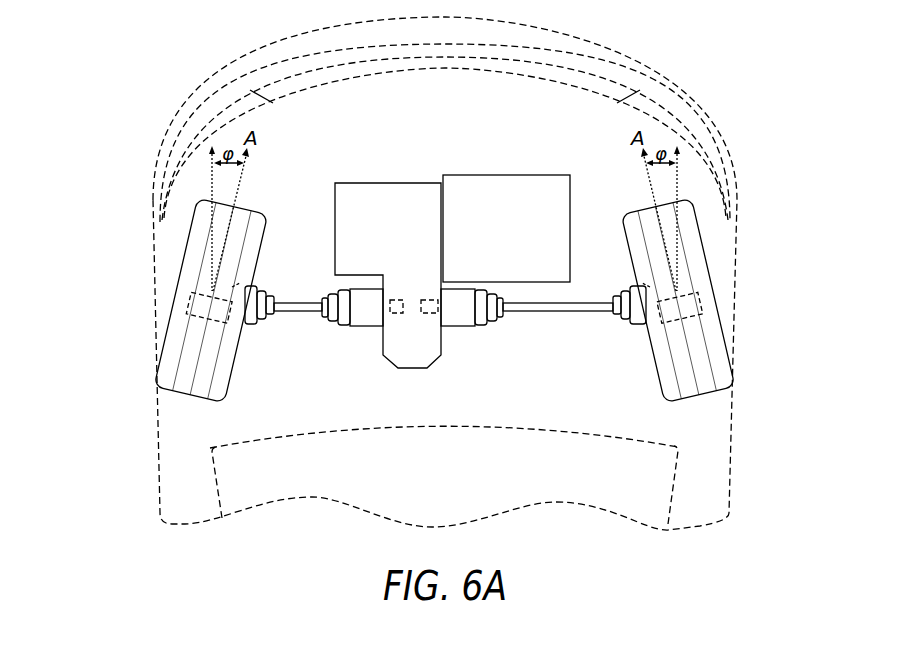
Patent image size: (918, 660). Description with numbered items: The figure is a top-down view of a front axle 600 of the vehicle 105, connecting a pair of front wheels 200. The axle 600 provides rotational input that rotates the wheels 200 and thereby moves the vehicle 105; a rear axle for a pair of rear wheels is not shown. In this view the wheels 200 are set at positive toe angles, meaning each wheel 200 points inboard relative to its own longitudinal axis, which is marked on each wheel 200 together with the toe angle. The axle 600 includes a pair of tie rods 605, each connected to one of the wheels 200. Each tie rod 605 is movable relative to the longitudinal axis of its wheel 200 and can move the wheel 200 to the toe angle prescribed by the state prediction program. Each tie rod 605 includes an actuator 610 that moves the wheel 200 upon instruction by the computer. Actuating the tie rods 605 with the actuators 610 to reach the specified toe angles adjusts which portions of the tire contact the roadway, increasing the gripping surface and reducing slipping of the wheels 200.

The vehicle 105 is at (110, 88).
The wheel 200 is at (182, 394).
The axle 600 is at (537, 316).
The tie rod 605 is at (208, 320).
The actuator 610 is at (238, 290).